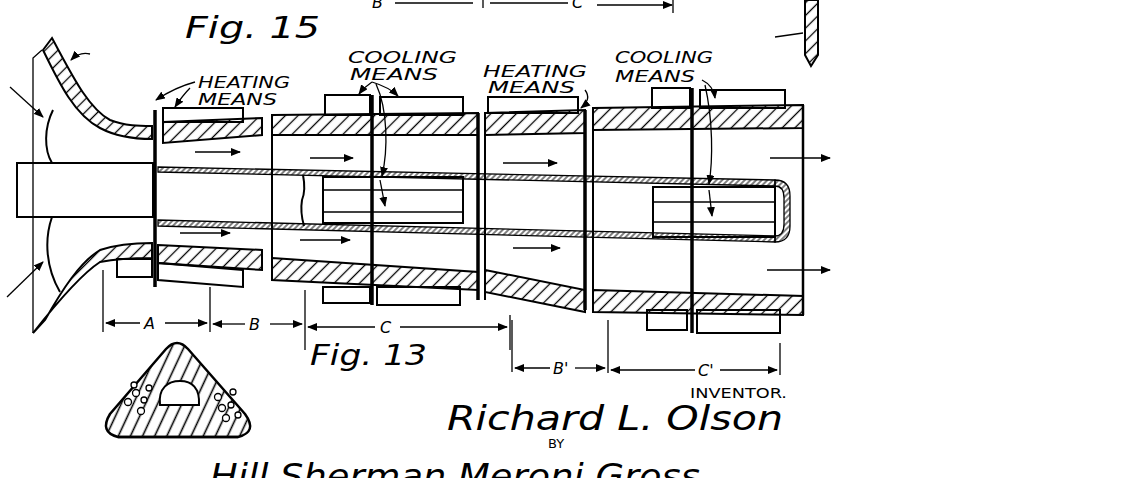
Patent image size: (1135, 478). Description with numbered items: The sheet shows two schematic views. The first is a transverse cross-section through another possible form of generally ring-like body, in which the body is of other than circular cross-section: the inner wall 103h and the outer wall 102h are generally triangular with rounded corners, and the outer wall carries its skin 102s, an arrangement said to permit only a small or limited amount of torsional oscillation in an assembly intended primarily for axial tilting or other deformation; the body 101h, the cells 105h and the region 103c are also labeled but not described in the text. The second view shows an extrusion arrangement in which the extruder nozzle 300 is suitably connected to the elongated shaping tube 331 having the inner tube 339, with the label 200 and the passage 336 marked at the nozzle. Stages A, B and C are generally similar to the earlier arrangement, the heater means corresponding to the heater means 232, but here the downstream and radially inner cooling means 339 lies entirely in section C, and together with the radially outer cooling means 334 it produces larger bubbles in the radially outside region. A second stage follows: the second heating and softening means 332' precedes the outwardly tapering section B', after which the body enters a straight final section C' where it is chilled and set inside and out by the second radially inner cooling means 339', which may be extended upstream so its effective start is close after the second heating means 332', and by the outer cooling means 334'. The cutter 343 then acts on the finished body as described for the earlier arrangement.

In FIG. 15, the extruder nozzle 200 is at (111, 0).
In FIG. 15, the extruder nozzle 300 is at (62, 330).
In FIG. 15, the core member 336 is at (104, 162).
In FIG. 15, the heater means 232 is at (141, 97).
In FIG. 15, the elongated shaping tube 331 is at (296, 112).
In FIG. 15, the outer cooling means 334 is at (403, 310).
In FIG. 15, the inner tube 339 is at (384, 188).
In FIG. 15, the second heating means 332' is at (535, 308).
In FIG. 15, the cooling means block 334' is at (707, 334).
In FIG. 15, the second inner cooling means 339' is at (701, 231).
In FIG. 15, the cutter 343 is at (805, 45).
In FIG. 13, the outer wall 102h is at (163, 357).
In FIG. 13, the extruded product 101h is at (242, 389).
In FIG. 13, the skin 102s is at (245, 429).
In FIG. 13, the inner wall 103h is at (213, 383).
In FIG. 13, the cells 105h is at (139, 385).
In FIG. 13, the cells 103c is at (236, 398).